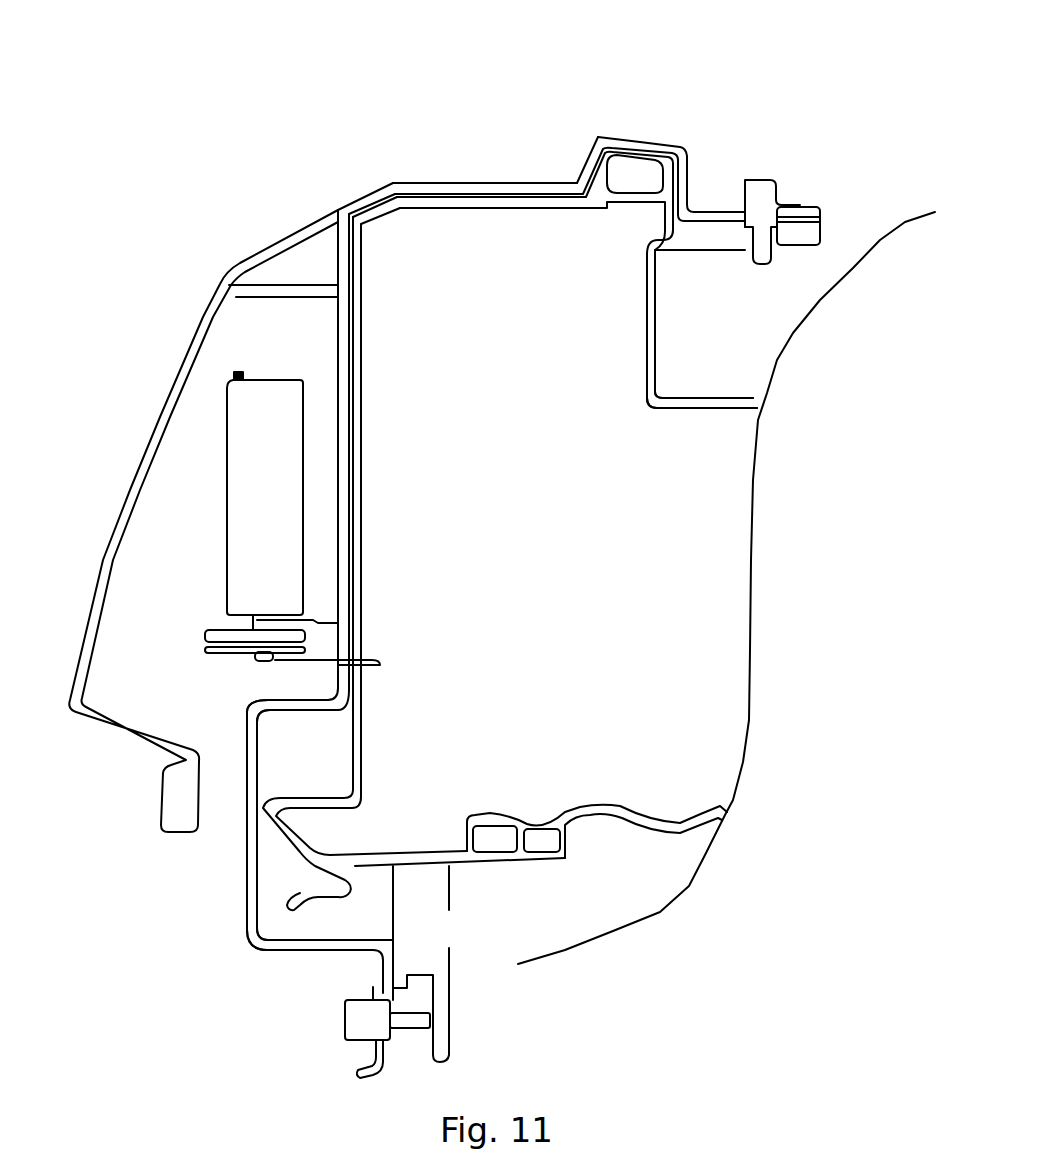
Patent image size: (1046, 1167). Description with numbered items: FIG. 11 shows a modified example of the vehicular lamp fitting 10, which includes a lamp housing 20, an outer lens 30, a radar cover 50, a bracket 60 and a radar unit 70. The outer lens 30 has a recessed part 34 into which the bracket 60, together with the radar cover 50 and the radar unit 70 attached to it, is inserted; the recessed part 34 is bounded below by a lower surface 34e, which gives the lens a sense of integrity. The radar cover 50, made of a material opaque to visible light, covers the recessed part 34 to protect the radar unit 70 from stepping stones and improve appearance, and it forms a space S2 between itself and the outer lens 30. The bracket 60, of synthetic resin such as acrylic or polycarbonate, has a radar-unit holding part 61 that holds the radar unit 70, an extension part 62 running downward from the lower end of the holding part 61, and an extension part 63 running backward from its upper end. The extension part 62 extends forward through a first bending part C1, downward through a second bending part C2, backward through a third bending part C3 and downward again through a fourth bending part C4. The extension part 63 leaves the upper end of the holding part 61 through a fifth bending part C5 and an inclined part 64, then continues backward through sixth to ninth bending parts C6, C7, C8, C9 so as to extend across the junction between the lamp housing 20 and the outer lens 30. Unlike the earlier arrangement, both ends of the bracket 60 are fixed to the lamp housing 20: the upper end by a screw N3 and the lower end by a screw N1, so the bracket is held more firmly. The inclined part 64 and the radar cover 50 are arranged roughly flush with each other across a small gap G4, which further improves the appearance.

The vehicular lamp fitting 10 is at (507, 78).
The lamp housing 20 is at (657, 330).
The outer lens 30 is at (365, 481).
The recessed part 34 is at (423, 455).
The lower surface 34e is at (312, 797).
The radar cover 50 is at (130, 490).
The bracket 60 is at (358, 512).
The radar-unit holding part 61 is at (355, 546).
The extension part 62 is at (245, 892).
The extension part 63 is at (440, 183).
The inclined part 64 is at (372, 190).
The radar unit 70 is at (272, 378).
The first bending part C1 is at (350, 708).
The second bending part C2 is at (255, 702).
The third bending part C3 is at (252, 942).
The fourth bending part C4 is at (395, 950).
The fifth bending part C5 is at (340, 208).
The sixth bending part C6 is at (577, 183).
The seventh bending part C7 is at (597, 138).
The eighth bending part C8 is at (690, 150).
The ninth bending part C9 is at (695, 210).
The gap G4 is at (336, 212).
The screw N1 is at (345, 1020).
The screw N3 is at (760, 178).
The space S2 is at (178, 621).